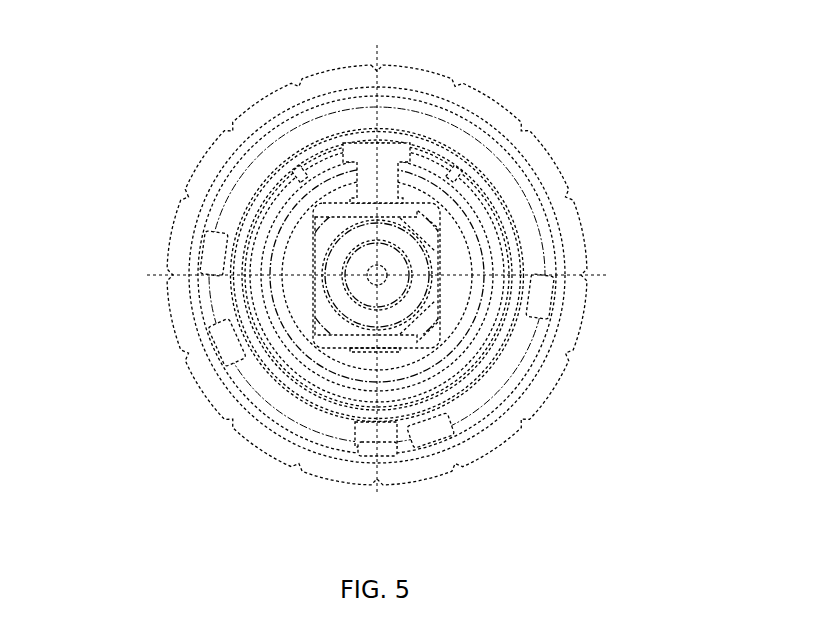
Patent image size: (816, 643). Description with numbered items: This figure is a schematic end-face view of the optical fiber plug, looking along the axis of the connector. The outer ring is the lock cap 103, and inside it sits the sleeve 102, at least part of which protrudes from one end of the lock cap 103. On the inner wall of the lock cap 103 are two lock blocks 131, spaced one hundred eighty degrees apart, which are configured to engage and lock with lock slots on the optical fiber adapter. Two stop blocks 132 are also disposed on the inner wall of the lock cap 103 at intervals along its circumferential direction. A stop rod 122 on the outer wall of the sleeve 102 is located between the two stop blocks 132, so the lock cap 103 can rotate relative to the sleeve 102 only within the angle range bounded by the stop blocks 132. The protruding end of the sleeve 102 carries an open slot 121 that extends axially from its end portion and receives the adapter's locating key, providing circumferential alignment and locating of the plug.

The sleeve 102 is at (285, 225).
The lock cap 103 is at (553, 173).
The open slot 121 is at (388, 183).
The stop rod 122 is at (368, 428).
The lock block 131 is at (214, 255).
The stop block 132 is at (223, 347).